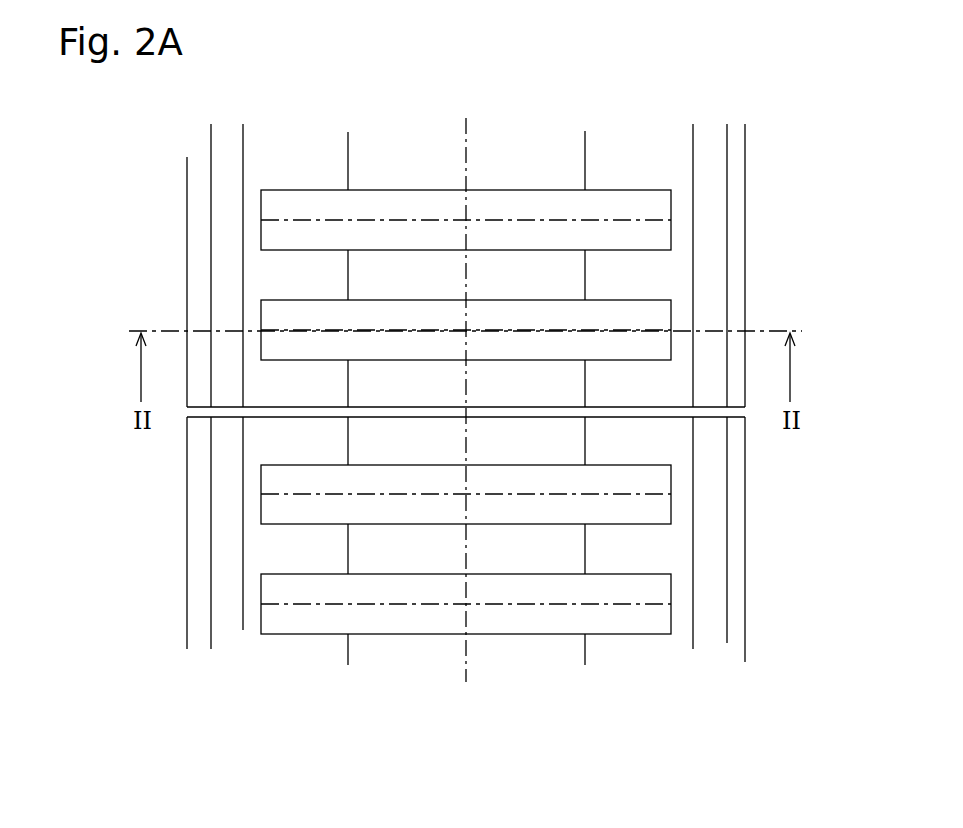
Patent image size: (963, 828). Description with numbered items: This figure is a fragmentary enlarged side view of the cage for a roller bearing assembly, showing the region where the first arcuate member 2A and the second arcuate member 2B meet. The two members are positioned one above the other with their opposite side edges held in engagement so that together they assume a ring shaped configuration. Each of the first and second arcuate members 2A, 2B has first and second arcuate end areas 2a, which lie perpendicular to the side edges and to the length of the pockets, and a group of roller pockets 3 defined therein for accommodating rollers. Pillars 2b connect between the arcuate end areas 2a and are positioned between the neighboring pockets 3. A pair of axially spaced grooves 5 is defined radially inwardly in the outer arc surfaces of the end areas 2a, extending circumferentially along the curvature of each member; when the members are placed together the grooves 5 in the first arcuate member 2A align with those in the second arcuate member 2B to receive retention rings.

The arcuate end area 2a is at (198, 174).
The first arcuate member 2A is at (185, 225).
The second arcuate member 2B is at (184, 592).
The pillar 2b is at (393, 387).
The roller pocket 3 is at (500, 300).
The groove 5 is at (225, 268).